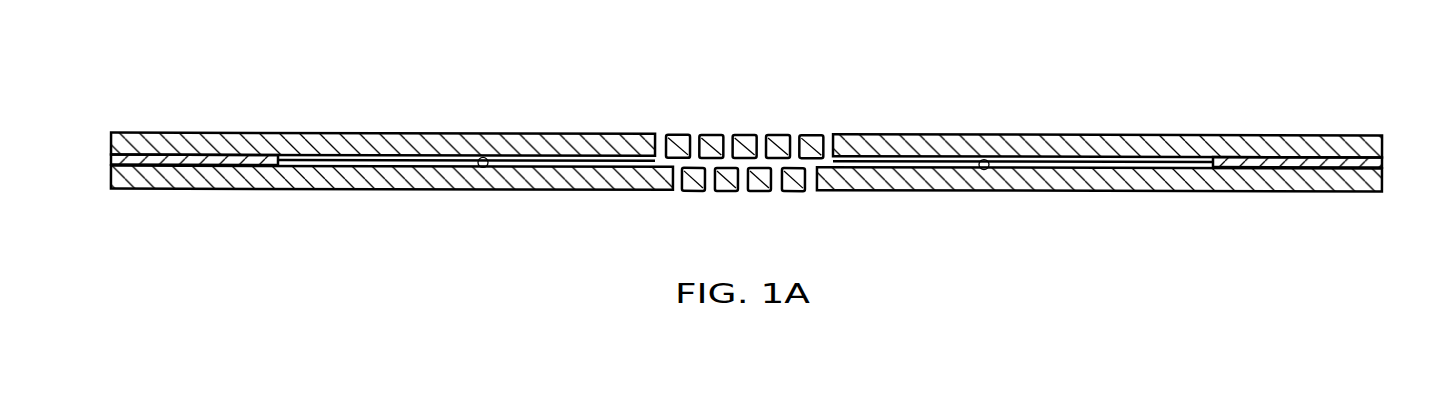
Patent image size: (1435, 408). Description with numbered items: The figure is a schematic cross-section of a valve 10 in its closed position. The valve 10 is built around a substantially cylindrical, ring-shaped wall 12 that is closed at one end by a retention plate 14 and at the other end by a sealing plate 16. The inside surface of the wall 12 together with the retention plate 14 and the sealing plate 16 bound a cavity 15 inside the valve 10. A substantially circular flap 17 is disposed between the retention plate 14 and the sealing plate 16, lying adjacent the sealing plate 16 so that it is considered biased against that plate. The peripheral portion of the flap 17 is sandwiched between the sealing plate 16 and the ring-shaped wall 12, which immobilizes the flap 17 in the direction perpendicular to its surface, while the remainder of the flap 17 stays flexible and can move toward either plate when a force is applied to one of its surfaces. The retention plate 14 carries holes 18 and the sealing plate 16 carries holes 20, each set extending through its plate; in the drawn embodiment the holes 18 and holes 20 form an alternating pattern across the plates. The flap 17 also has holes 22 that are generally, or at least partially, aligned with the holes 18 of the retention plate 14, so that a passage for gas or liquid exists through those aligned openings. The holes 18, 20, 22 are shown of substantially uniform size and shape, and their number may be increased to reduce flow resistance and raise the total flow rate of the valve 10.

The valve 10 is at (746, 134).
The wall 12 is at (213, 160).
The retention plate 14 is at (338, 143).
The cavity 15 is at (397, 162).
The sealing plate 16 is at (352, 180).
The flap 17 is at (483, 168).
The holes 18 is at (662, 138).
The holes 20 is at (779, 185).
The holes 22 is at (727, 167).